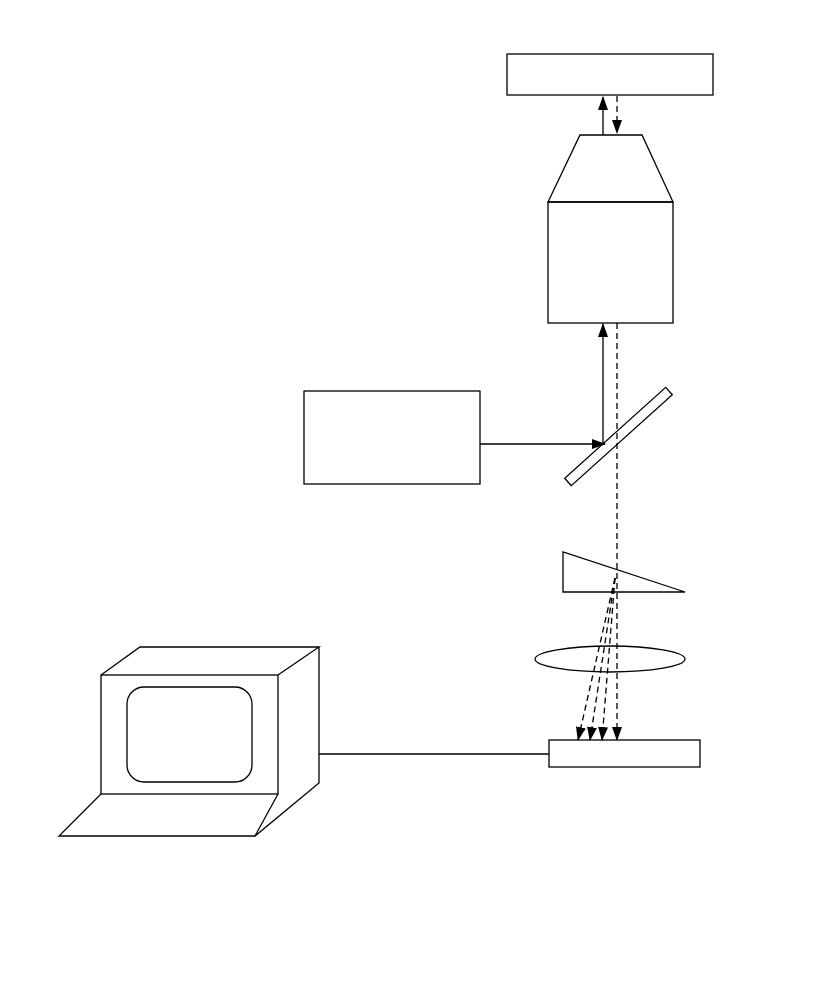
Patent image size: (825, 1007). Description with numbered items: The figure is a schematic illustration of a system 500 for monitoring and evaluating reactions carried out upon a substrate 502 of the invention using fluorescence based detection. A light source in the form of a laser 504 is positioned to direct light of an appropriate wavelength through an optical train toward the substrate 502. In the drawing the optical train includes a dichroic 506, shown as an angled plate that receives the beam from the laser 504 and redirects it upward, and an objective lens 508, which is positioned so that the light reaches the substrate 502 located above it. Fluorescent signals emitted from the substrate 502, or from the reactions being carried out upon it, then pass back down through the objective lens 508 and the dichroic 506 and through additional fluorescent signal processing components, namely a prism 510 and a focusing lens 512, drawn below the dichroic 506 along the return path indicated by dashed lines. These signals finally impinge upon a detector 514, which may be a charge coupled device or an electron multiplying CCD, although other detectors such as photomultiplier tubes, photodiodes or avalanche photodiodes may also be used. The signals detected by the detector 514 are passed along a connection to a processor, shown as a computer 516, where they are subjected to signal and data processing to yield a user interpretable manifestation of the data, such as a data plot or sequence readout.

The system 500 is at (248, 95).
The substrate 502 is at (688, 80).
The laser 504 is at (392, 437).
The dichroic 506 is at (662, 415).
The objective lens 508 is at (610, 229).
The prism 510 is at (648, 578).
The focusing lens 512 is at (647, 658).
The detector 514 is at (648, 752).
The computer 516 is at (182, 660).